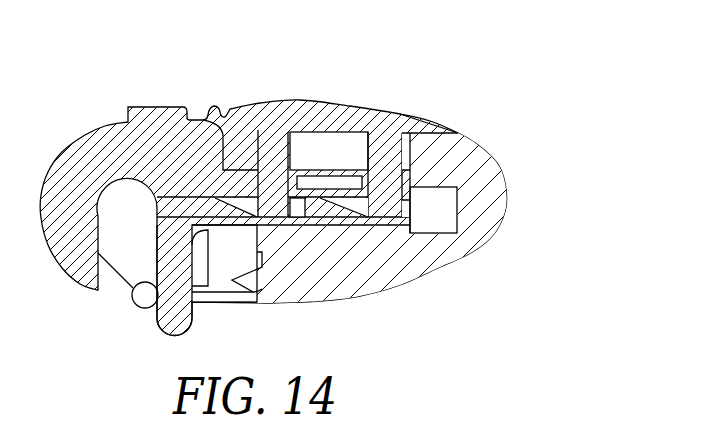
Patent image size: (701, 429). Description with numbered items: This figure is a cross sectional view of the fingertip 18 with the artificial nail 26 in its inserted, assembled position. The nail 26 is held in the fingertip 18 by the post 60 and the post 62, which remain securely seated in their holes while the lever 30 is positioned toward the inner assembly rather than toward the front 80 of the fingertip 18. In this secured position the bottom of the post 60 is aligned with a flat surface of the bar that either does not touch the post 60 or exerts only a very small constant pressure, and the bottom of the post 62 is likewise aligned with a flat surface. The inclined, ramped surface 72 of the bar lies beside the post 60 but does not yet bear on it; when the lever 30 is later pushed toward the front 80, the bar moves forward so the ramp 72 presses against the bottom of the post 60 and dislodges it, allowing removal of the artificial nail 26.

The fingertip 18 is at (450, 260).
The artificial nail 26 is at (365, 108).
The lever 30 is at (170, 335).
The post 60 is at (400, 118).
The post 62 is at (273, 143).
The inclined surface (ramp) 72 is at (337, 220).
The front 80 is at (490, 202).